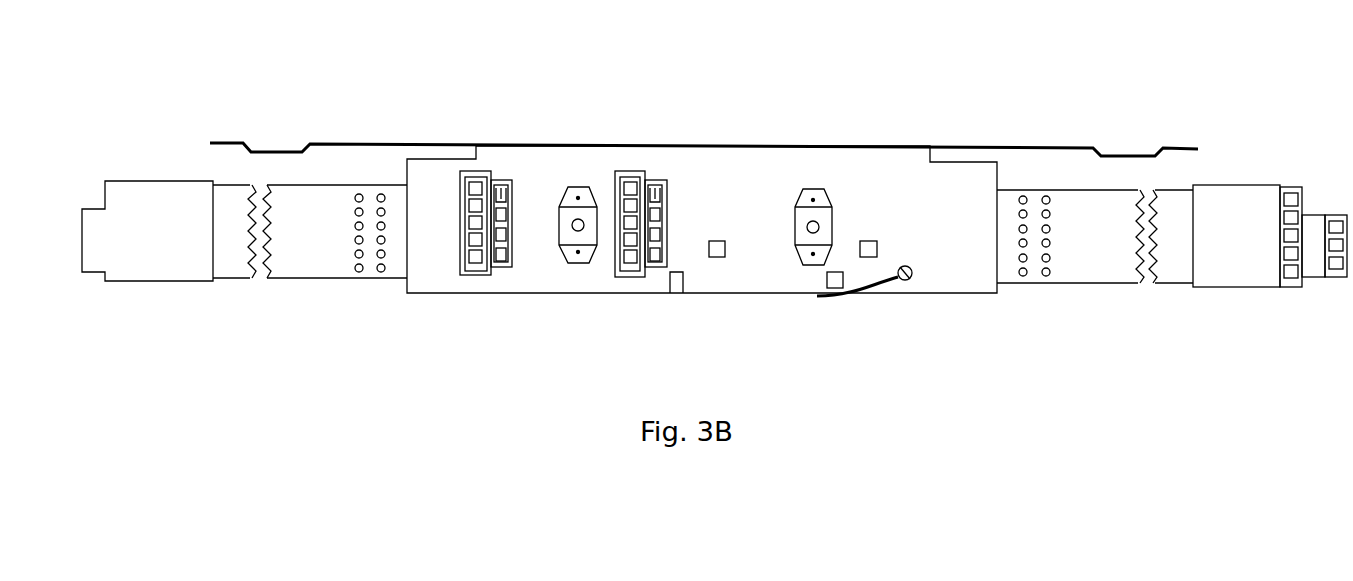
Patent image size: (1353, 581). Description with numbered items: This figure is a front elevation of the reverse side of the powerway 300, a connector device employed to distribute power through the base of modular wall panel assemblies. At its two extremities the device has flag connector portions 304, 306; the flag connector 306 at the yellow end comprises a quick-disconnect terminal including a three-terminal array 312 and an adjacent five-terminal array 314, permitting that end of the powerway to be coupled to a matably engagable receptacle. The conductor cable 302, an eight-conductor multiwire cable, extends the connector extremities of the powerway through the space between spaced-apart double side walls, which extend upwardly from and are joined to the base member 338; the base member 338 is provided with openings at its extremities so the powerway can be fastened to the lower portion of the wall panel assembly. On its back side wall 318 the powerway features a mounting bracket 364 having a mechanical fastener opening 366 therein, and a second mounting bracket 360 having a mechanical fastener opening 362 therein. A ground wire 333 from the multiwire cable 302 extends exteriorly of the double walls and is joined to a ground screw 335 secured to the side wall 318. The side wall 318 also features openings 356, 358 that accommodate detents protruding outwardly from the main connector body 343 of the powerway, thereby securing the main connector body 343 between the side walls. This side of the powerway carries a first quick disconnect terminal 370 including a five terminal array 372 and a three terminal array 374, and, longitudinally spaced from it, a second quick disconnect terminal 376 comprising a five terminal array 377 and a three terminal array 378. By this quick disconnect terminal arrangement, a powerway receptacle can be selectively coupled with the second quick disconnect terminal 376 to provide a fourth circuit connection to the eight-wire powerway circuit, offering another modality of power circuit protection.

The powerway 300 is at (958, 86).
The conductor cable 302 is at (288, 268).
The flag connector portion 304 is at (157, 262).
The flag connector portion 306 is at (1210, 275).
The three-terminal array 312 is at (1338, 278).
The five-terminal array 314 is at (1292, 288).
The back side wall 318 is at (763, 278).
The ground wire 333 is at (867, 280).
The ground screw 335 is at (917, 276).
The base member 338 is at (347, 143).
The main connector body 343 is at (678, 285).
The opening 356 is at (718, 241).
The opening 358 is at (868, 241).
The second mounting bracket 360 is at (797, 207).
The mechanical fastener opening 362 is at (814, 222).
The mounting bracket 364 is at (562, 212).
The mechanical fastener opening 366 is at (578, 222).
The first quick disconnect terminal 370 is at (481, 277).
The five terminal array 372 is at (468, 262).
The three terminal array 374 is at (500, 258).
The second quick disconnect terminal 376 is at (640, 277).
The five terminal array 377 is at (627, 262).
The three terminal array 378 is at (655, 258).